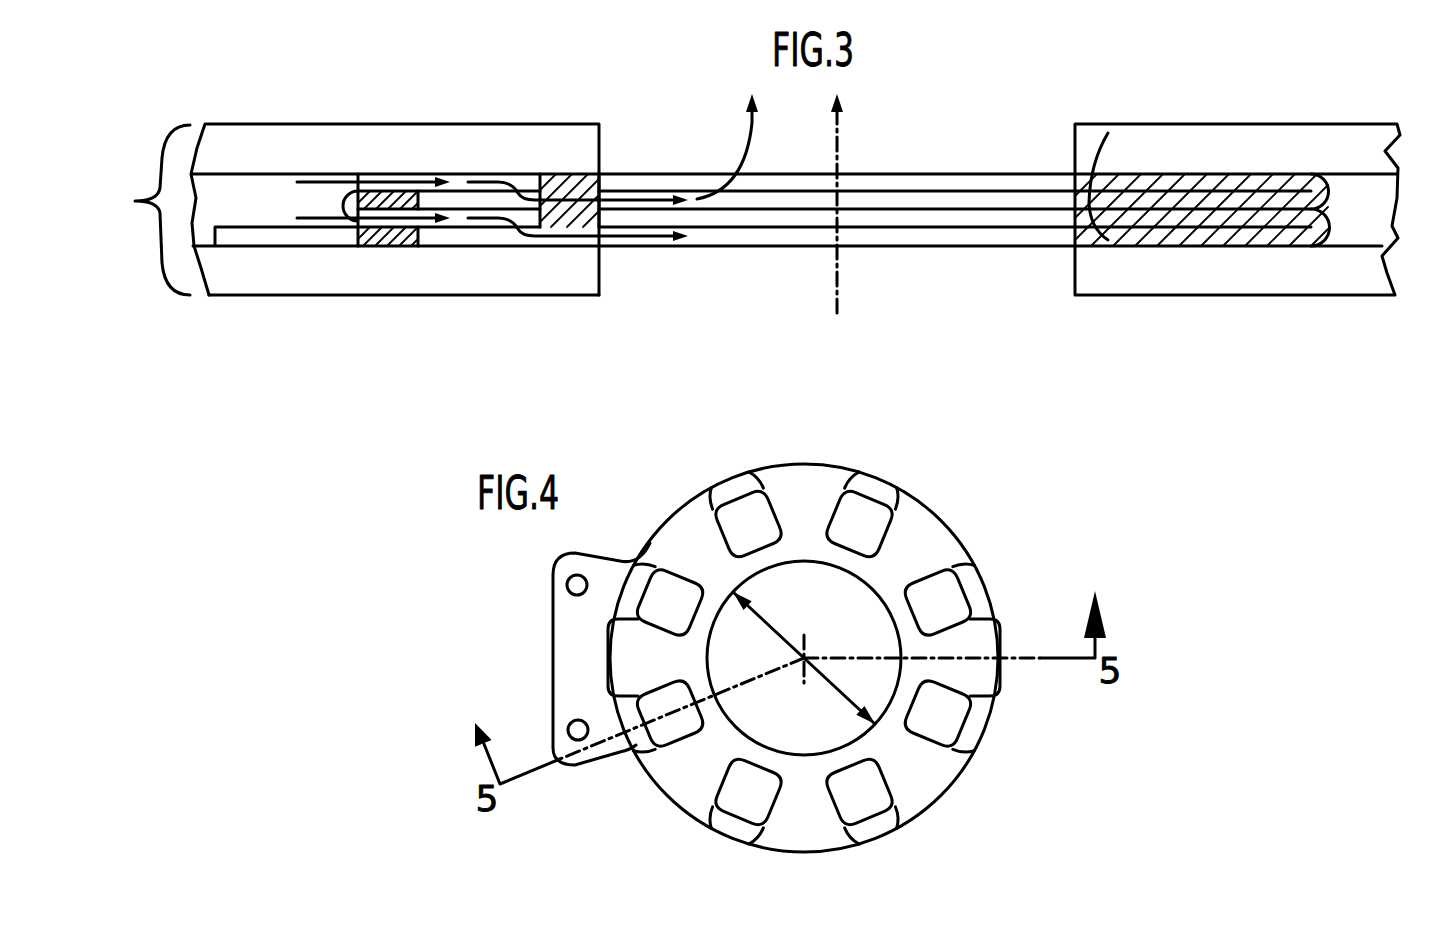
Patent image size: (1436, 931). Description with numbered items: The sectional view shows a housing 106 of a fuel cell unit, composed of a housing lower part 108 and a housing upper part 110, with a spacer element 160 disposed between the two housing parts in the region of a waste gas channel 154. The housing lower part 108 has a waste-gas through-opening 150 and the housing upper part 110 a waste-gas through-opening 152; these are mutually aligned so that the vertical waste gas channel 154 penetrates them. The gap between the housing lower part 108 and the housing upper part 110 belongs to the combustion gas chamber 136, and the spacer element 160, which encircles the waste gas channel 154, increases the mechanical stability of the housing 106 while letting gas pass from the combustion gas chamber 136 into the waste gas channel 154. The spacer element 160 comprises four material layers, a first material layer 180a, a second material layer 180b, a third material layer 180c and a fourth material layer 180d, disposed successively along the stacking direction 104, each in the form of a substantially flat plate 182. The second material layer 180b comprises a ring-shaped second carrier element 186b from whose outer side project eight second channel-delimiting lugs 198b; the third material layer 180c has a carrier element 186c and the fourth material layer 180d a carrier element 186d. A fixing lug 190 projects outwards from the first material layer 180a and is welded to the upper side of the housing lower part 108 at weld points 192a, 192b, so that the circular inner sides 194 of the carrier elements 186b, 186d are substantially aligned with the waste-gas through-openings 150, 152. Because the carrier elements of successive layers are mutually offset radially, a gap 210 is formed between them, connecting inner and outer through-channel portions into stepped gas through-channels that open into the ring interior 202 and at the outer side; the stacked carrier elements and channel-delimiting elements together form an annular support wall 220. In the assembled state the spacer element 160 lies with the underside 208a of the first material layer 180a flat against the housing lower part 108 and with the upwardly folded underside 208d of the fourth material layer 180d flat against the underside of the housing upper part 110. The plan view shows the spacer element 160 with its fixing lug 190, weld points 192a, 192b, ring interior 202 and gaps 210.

In FIG. 3, the stacking direction 104 is at (837, 277).
In FIG. 3, the housing 106 is at (135, 203).
In FIG. 3, the housing lower part 108 is at (263, 278).
In FIG. 3, the housing upper part 110 is at (298, 137).
In FIG. 3, the combustion gas chamber 136 is at (247, 197).
In FIG. 3, the waste-gas through-opening 150 is at (1075, 265).
In FIG. 3, the waste-gas through-opening 152 is at (1075, 143).
In FIG. 3, the waste gas channel 154 is at (776, 240).
In FIG. 3, the spacer element 160 is at (910, 160).
In FIG. 4, the spacer element 160 is at (979, 489).
In FIG. 3, the first material layer 180a is at (1145, 237).
In FIG. 3, the second material layer 180b is at (1178, 217).
In FIG. 3, the third material layer 180c is at (1163, 200).
In FIG. 4, the third material layer 180c is at (885, 495).
In FIG. 3, the fourth material layer 180d is at (1213, 185).
In FIG. 4, the fourth material layer 180d is at (977, 667).
In FIG. 3, the flat plate 182 is at (1108, 135).
In FIG. 3, the second carrier element 186b is at (585, 222).
In FIG. 4, the carrier element 186c is at (752, 487).
In FIG. 3, the carrier element 186d is at (578, 182).
In FIG. 4, the carrier element 186d is at (680, 790).
In FIG. 4, the fixing lug 190 is at (563, 653).
In FIG. 4, the weld point 192a is at (567, 587).
In FIG. 4, the weld point 192b is at (568, 730).
In FIG. 3, the inner side 194 is at (602, 183).
In FIG. 4, the second channel-delimiting lug 198b is at (918, 783).
In FIG. 4, the ring interior 202 is at (818, 638).
In FIG. 3, the underside of the first material layer 208a is at (385, 250).
In FIG. 3, the underside of the fourth material layer 208d is at (553, 177).
In FIG. 4, the gap 210 is at (751, 520).
In FIG. 3, the annular support wall 220 is at (392, 197).
In FIG. 4, the annular support wall 220 is at (683, 537).